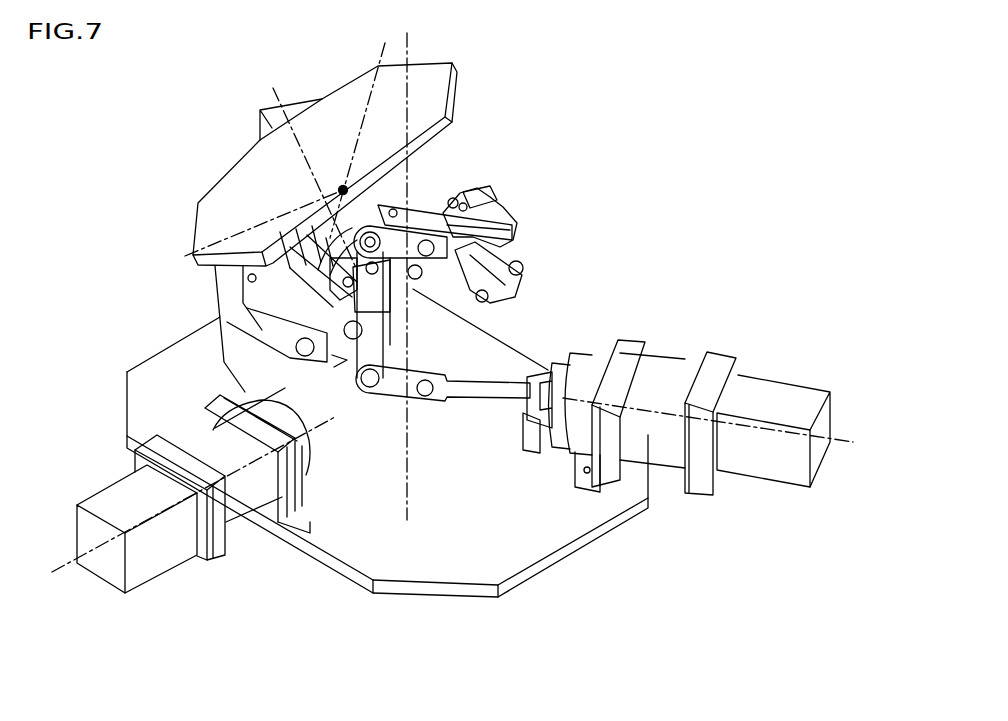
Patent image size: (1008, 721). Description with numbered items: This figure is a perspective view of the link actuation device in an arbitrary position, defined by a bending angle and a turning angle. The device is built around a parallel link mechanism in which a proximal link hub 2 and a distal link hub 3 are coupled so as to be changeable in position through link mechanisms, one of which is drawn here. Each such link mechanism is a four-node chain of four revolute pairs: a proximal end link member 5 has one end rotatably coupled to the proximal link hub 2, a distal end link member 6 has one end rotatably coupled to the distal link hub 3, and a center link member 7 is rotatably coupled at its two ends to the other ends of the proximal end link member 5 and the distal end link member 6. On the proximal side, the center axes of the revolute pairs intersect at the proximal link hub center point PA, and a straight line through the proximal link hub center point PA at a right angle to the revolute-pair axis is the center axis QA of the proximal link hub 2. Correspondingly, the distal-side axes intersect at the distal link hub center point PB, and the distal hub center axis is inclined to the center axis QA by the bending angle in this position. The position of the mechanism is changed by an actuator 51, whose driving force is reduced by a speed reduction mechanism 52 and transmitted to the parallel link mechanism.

The proximal link hub 2 is at (505, 553).
The distal link hub 3 is at (456, 90).
The proximal end link member 5 is at (465, 421).
The distal end link member 6 is at (202, 317).
The center link member 7 is at (347, 360).
The actuator 51 is at (778, 397).
The speed reduction mechanism 52 is at (668, 377).
The proximal link hub center point PA is at (349, 361).
The distal link hub center point PB is at (343, 188).
The center axis of link hub 2 QA is at (410, 41).